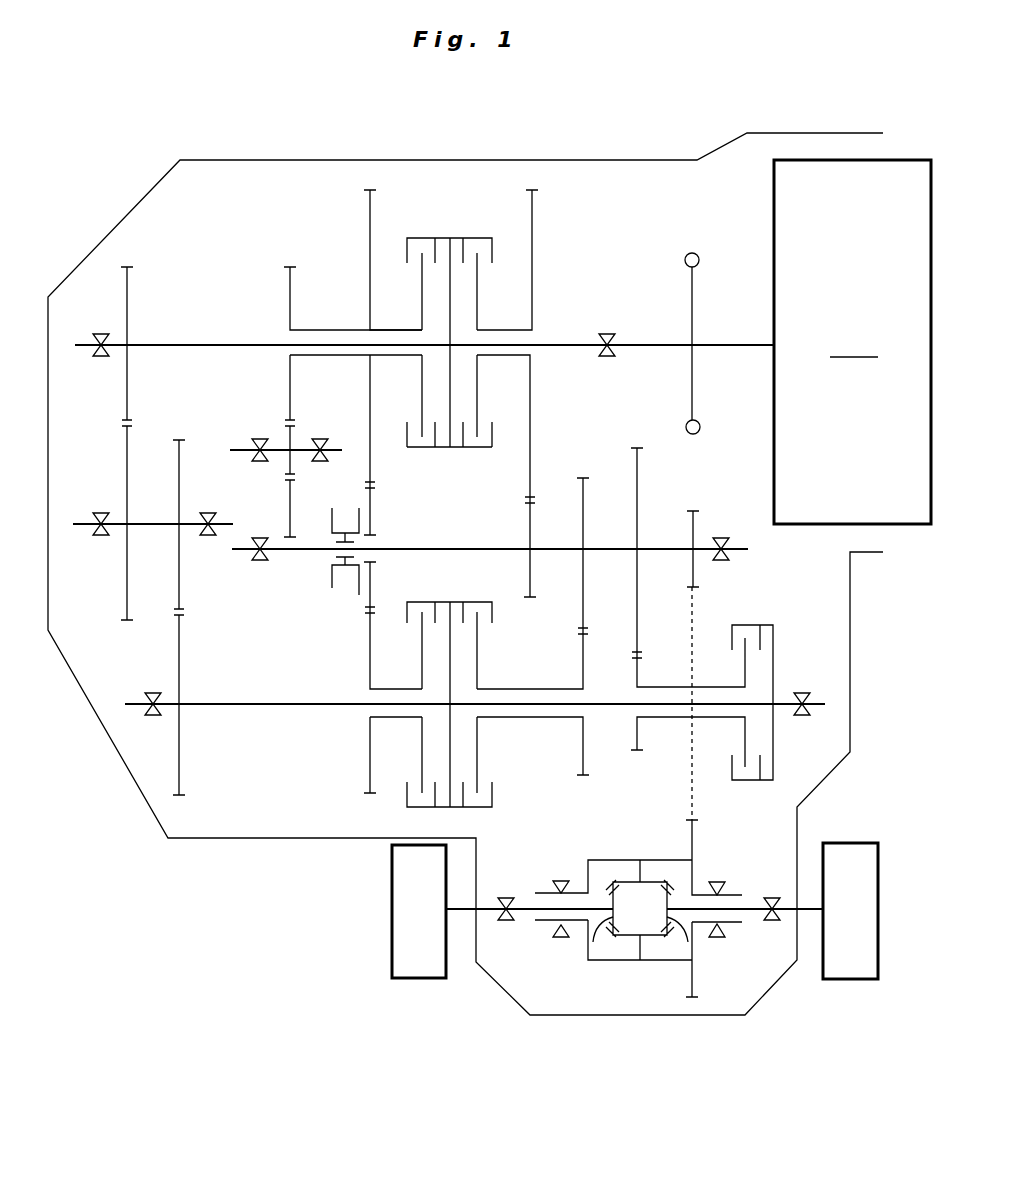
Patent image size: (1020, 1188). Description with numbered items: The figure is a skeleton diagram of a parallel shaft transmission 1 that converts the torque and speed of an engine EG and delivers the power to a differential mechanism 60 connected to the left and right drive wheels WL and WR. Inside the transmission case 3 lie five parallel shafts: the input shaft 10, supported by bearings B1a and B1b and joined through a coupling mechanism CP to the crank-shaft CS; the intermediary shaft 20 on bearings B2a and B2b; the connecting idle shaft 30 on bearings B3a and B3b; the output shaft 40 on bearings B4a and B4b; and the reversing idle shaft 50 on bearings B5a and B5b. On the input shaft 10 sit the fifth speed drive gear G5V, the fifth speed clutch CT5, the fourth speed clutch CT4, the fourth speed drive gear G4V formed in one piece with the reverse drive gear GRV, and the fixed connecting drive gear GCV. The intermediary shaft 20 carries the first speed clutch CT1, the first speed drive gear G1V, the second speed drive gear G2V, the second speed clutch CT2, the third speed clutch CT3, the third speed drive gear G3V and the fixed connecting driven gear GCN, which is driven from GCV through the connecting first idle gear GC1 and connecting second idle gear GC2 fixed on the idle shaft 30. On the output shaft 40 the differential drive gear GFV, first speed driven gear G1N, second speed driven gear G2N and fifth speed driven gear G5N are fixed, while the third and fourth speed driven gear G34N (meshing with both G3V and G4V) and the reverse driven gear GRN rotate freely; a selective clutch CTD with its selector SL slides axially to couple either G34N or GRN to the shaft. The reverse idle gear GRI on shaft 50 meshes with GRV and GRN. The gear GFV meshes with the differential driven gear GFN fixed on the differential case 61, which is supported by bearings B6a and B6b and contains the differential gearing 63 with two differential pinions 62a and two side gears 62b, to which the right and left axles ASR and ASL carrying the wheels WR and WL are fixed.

The transmission 1 is at (240, 238).
The transmission case 3 is at (272, 160).
The input shaft 10 is at (173, 345).
The intermediary shaft 20 is at (258, 703).
The connecting idle shaft 30 is at (150, 522).
The output shaft 40 is at (452, 549).
The reversing idle shaft 50 is at (340, 450).
The differential mechanism 60 is at (570, 852).
The differential case 61 is at (608, 962).
The differential pinion 62a is at (636, 860).
The side gear 62b is at (595, 944).
The differential mechanism 63 is at (600, 860).
The engine EG is at (852, 342).
The crank-shaft CS is at (730, 343).
The coupling mechanism CP is at (690, 290).
The first speed clutch CT1 is at (745, 622).
The second speed clutch CT2 is at (480, 600).
The third speed clutch CT3 is at (422, 600).
The fourth speed clutch CT4 is at (423, 234).
The fifth speed clutch CT5 is at (478, 234).
The selective clutch CTD is at (345, 598).
The selector SL is at (345, 520).
The first speed driven gear G1N is at (637, 470).
The first speed drive gear G1V is at (640, 750).
The second speed driven gear G2N is at (583, 600).
The second speed drive gear G2V is at (583, 750).
The third speed drive gear G3V is at (370, 757).
The third and fourth speed driven gear G34N is at (372, 502).
The fourth speed drive gear G4V is at (370, 215).
The fifth speed driven gear G5N is at (530, 512).
The fifth speed drive gear G5V is at (532, 216).
The reverse drive gear GRV is at (290, 287).
The reverse idle gear GRI is at (287, 438).
The reverse driven gear GRN is at (289, 514).
The connecting drive gear GCV is at (130, 273).
The connecting first idle gear GC1 is at (127, 462).
The connecting second idle gear GC2 is at (181, 582).
The connecting driven gear GCN is at (179, 660).
The differential drive gear GFV is at (693, 518).
The differential driven gear GFN is at (693, 835).
The bearing B1a is at (607, 332).
The bearing B1b is at (101, 332).
The bearing B2a is at (802, 692).
The bearing B2b is at (153, 716).
The bearing B3a is at (208, 511).
The bearing B3b is at (101, 537).
The bearing B4a is at (721, 537).
The bearing B4b is at (260, 562).
The bearing B5a is at (320, 437).
The bearing B5b is at (258, 437).
The bearing B6a is at (720, 882).
The bearing B6b is at (555, 882).
The left axle ASL is at (465, 912).
The right axle ASR is at (808, 912).
The left drive wheel WL is at (422, 980).
The right drive wheel WR is at (850, 982).